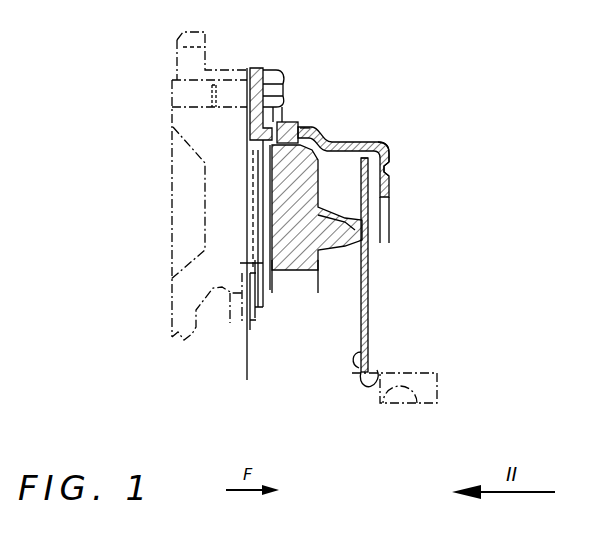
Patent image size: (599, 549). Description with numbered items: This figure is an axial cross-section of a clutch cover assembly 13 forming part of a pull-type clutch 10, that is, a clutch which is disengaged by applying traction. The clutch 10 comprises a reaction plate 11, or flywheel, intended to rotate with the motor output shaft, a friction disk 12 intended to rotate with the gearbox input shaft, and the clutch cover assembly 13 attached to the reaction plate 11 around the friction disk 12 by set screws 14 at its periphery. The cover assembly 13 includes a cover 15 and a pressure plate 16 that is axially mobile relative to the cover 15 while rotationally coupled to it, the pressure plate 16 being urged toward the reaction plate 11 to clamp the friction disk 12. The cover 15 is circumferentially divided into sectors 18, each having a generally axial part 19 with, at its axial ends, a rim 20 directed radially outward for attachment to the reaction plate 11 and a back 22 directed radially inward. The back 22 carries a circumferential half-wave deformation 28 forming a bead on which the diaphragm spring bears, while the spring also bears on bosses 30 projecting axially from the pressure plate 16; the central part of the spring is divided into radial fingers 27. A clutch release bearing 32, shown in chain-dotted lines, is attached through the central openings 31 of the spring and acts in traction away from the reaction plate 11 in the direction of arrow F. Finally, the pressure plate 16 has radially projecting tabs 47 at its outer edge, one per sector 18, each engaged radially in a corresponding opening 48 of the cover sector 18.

The clutch 10 is at (316, 90).
The reaction plate 11 is at (161, 144).
The friction disk 12 is at (239, 152).
The clutch cover assembly 13 is at (394, 78).
The set screw 14 is at (277, 68).
The cover 15 is at (406, 165).
The pressure plate 16 is at (261, 214).
The sector 18 is at (395, 134).
The axial part 19 is at (322, 138).
The first transverse part (rim) 20 is at (262, 68).
The second transverse part (back) 22 is at (389, 188).
The radial finger 27 is at (368, 312).
The half-wave deformation 28 is at (360, 167).
The boss 30 is at (337, 240).
The central opening 31 is at (377, 373).
The clutch release bearing 32 is at (446, 363).
The tab 47 is at (284, 121).
The opening 48 is at (307, 129).